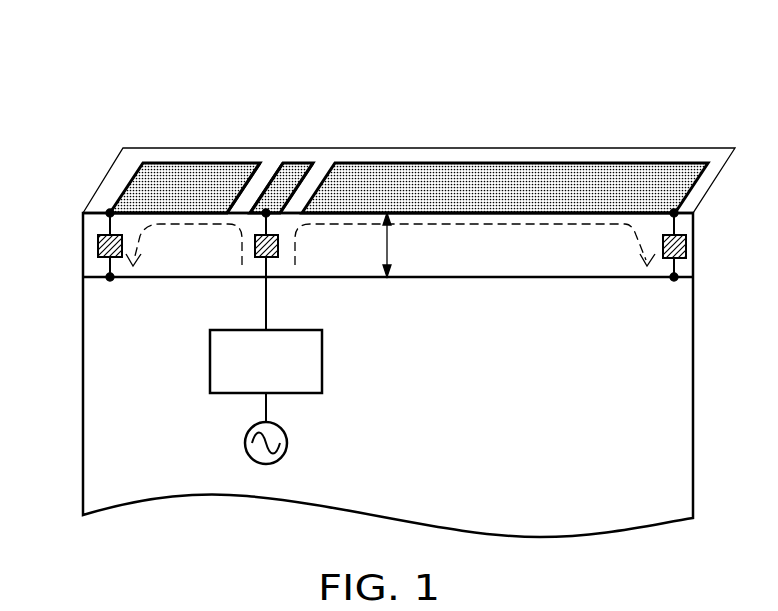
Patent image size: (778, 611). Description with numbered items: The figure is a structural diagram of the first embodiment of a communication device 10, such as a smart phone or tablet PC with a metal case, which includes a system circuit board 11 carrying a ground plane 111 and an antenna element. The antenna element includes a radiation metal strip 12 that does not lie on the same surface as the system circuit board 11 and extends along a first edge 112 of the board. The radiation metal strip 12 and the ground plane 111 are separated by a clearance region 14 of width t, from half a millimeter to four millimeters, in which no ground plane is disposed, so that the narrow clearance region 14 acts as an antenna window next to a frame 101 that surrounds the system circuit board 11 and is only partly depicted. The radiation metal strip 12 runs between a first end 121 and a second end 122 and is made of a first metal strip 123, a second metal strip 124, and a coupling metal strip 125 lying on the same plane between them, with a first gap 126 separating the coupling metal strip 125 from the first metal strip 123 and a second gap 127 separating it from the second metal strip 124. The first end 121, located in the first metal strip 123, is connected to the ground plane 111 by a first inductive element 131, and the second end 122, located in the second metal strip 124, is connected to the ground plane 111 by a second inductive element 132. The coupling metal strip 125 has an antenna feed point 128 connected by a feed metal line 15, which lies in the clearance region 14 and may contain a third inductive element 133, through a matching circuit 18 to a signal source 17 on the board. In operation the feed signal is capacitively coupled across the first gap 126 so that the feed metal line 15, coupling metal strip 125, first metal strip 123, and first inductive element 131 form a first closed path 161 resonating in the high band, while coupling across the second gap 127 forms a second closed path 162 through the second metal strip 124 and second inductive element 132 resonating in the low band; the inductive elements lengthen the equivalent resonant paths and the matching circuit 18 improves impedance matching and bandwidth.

The communication device 10 is at (102, 61).
The system circuit board 11 is at (393, 369).
The radiation metal strip 12 is at (407, 44).
The clearance region 14 is at (457, 253).
The feed metal line 15 is at (265, 270).
The signal source 17 is at (266, 464).
The matching circuit 18 is at (322, 364).
The frame 101 is at (633, 148).
The ground plane 111 is at (680, 393).
The first edge 112 is at (89, 215).
The first end 121 is at (109, 211).
The second end 122 is at (674, 210).
The first metal strip 123 is at (186, 170).
The second metal strip 124 is at (387, 180).
The coupling metal strip 125 is at (267, 211).
The first gap 126 is at (258, 178).
The second gap 127 is at (314, 180).
The antenna feed point 128 is at (284, 190).
The first inductive element 131 is at (98, 247).
The second inductive element 132 is at (686, 247).
The third inductive element 133 is at (270, 258).
The first closed path 161 is at (170, 225).
The second closed path 162 is at (517, 225).